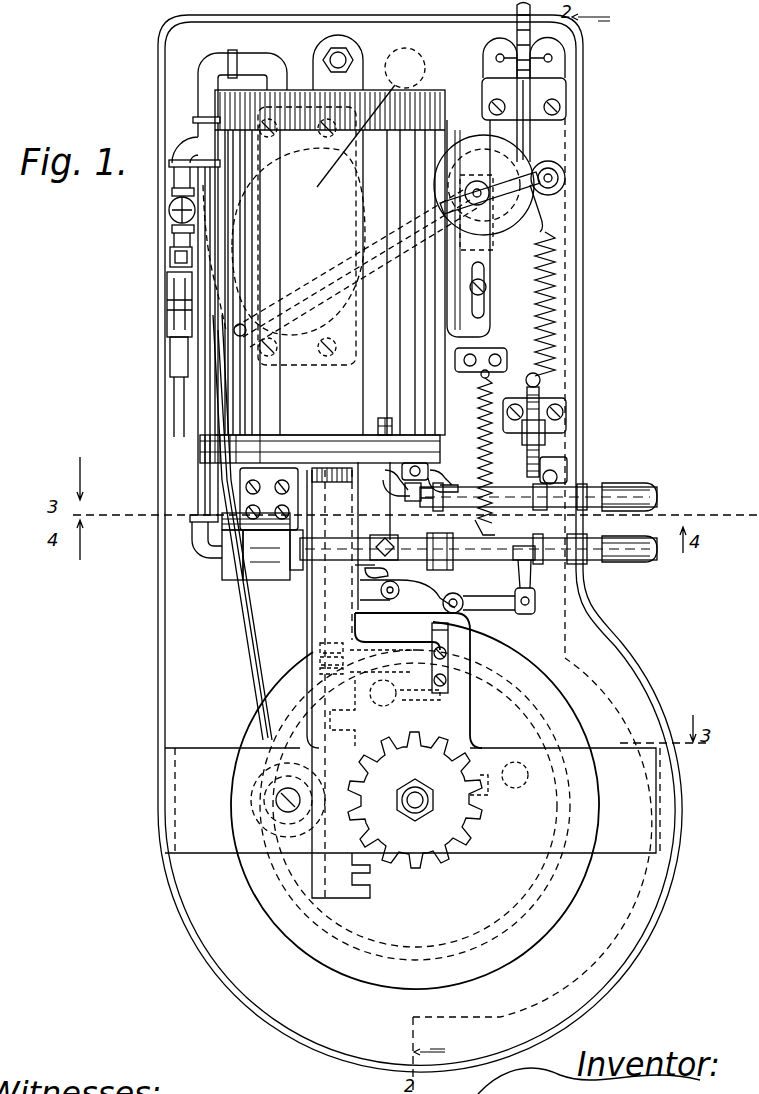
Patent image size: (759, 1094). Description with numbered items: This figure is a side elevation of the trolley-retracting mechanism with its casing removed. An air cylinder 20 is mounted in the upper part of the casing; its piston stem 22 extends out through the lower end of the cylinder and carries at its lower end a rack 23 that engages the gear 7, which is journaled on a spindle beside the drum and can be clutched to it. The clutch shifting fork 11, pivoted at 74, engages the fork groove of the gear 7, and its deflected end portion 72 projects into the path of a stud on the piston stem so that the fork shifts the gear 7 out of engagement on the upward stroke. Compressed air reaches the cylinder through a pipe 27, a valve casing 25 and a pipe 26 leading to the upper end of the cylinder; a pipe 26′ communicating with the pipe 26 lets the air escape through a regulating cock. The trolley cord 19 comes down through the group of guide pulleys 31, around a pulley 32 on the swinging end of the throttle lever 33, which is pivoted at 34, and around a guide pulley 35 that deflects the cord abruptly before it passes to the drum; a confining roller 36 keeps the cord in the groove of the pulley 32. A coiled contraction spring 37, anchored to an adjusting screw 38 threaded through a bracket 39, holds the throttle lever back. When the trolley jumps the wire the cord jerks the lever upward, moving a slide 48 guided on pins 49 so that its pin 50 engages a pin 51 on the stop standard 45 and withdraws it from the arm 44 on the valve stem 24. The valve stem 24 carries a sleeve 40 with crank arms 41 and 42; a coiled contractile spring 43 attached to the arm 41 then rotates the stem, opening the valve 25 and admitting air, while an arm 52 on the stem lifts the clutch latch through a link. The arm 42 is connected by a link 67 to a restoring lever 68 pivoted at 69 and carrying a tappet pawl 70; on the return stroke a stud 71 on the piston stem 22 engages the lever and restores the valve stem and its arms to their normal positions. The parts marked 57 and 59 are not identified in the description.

The gear 7 is at (440, 832).
The clutch shifting fork 11 is at (490, 784).
The trolley cord 19 is at (503, 155).
The air cylinder 20 is at (258, 412).
The piston stem 22 is at (276, 625).
The rack 23 is at (370, 882).
The valve stem 24 is at (450, 561).
The valve casing 25 is at (268, 583).
The pipe 26 is at (196, 497).
The pipe 26′ is at (170, 256).
The pipe 27 is at (636, 564).
The guide pulleys 31 is at (547, 48).
The pulley 32 is at (530, 153).
The throttle lever 33 is at (500, 192).
The pivot 34 is at (232, 324).
The guide pulley 35 is at (371, 117).
The confining roller 36 is at (566, 178).
The coiled contraction spring 37 is at (548, 322).
The adjusting screw 38 is at (541, 405).
The bracket 39 is at (566, 420).
The sleeve 40 is at (438, 562).
The crank arm 41 is at (473, 534).
The crank arm 42 is at (530, 575).
The coiled contractile spring 43 is at (489, 466).
The arm 44 is at (408, 505).
The stop standard 45 is at (366, 437).
The slide 48 is at (446, 325).
The pins or screws 49 is at (486, 296).
The pin 50 is at (438, 486).
The pin 51 is at (393, 423).
The arm 52 is at (432, 553).
The shaft 57 is at (625, 485).
The collar 59 is at (510, 507).
The link 67 is at (530, 610).
The restoring lever 68 is at (497, 610).
The pivot support 69 is at (462, 618).
The tappet pawl 70 is at (394, 681).
The arm or stud 71 is at (365, 570).
The end portion of shipping fork 72 is at (380, 695).
The pivot 74 is at (383, 693).